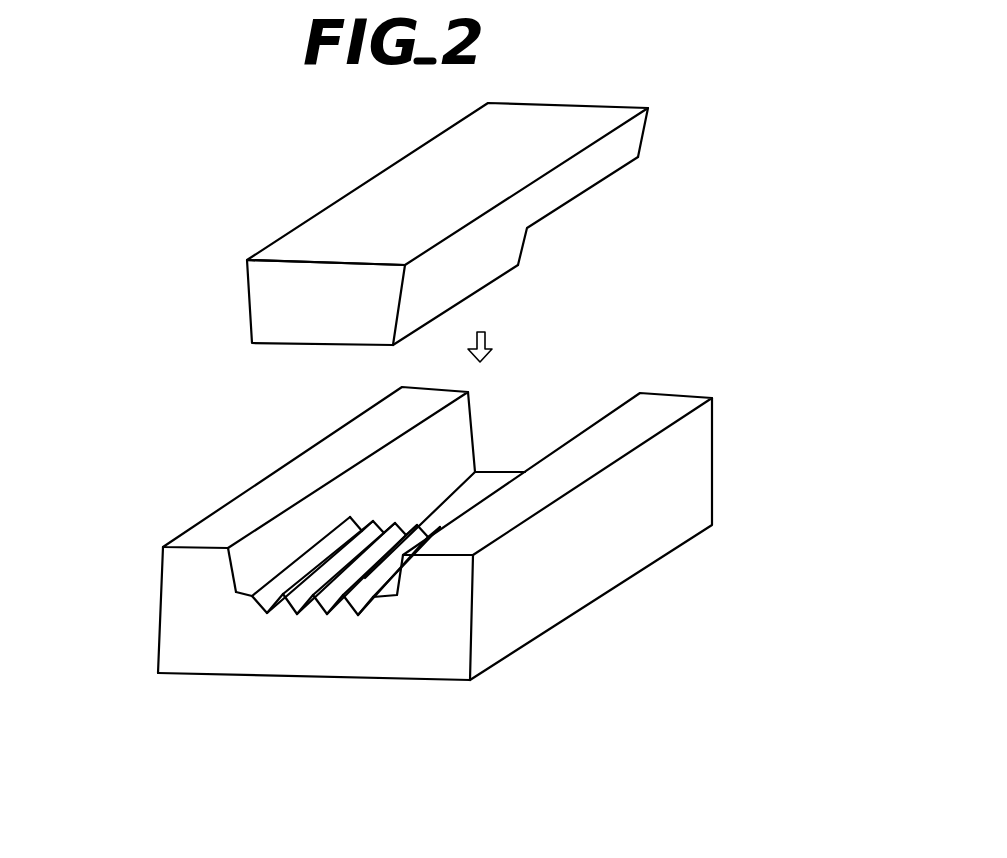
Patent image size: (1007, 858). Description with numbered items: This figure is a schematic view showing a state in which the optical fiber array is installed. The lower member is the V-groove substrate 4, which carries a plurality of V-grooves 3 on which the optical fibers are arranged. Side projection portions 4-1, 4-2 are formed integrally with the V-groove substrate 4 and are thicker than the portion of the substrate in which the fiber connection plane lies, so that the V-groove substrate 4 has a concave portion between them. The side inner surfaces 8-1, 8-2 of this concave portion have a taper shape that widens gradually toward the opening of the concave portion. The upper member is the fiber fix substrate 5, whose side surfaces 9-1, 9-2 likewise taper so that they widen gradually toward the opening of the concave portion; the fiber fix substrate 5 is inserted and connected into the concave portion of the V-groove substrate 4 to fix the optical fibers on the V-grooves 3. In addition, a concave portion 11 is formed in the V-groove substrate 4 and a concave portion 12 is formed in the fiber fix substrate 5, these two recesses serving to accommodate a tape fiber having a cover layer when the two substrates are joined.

The fiber fix substrate 5 is at (397, 178).
The concave portion 12 is at (528, 242).
The side surface 9-1 is at (250, 312).
The side surface 9-2 is at (463, 288).
The V-groove substrate 4 is at (382, 660).
The side projection portion 4-1 is at (170, 567).
The side projection portion 4-2 is at (448, 572).
The side inner surface 8-1 is at (228, 562).
The side inner surface 8-2 is at (403, 565).
The concave portion 11 is at (493, 480).
The V-grooves 3 is at (280, 602).